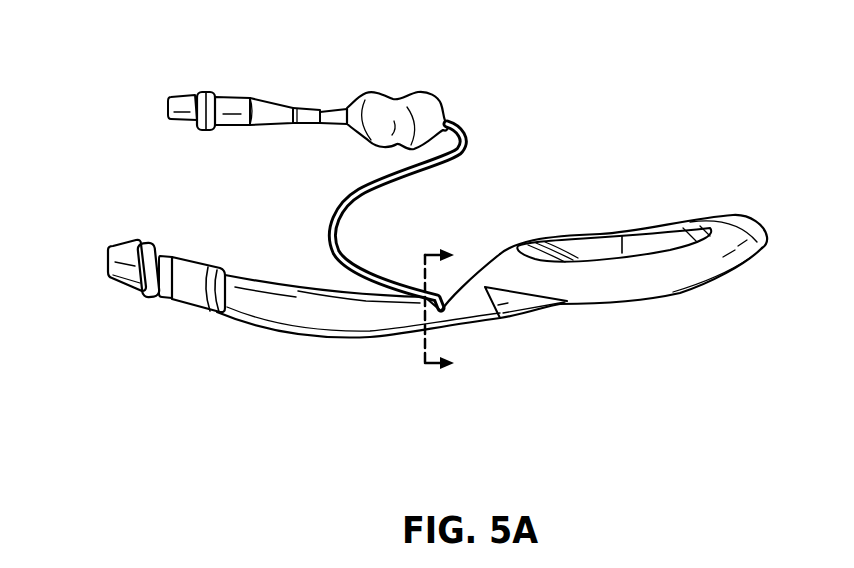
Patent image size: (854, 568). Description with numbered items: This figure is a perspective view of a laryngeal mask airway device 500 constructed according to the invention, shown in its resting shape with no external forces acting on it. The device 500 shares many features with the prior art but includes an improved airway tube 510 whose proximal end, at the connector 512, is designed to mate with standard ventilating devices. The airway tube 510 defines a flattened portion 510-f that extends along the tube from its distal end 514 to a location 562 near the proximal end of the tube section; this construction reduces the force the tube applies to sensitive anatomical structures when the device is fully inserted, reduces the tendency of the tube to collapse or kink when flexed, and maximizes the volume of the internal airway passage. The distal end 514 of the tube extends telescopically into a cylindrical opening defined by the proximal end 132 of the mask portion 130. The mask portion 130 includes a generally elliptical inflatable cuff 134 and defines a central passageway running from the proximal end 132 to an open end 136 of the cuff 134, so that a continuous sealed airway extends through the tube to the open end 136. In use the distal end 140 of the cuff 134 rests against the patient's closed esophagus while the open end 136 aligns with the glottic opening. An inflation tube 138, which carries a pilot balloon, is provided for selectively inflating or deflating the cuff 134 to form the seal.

The laryngeal mask airway device 500 is at (556, 402).
The inflation tube 138 is at (349, 86).
The airway tube 510 is at (277, 326).
The proximal connector 512 is at (108, 260).
The location of the tube section 562 is at (220, 282).
The flattened portion 510-f is at (280, 284).
The distal end of tube section 514 is at (485, 288).
The mask portion 130 is at (687, 342).
The inflatable cuff 134 is at (747, 262).
The distal end of cuff 140 is at (767, 233).
The open end of cuff 136 is at (602, 241).
The proximal end of mask portion 132 is at (528, 318).